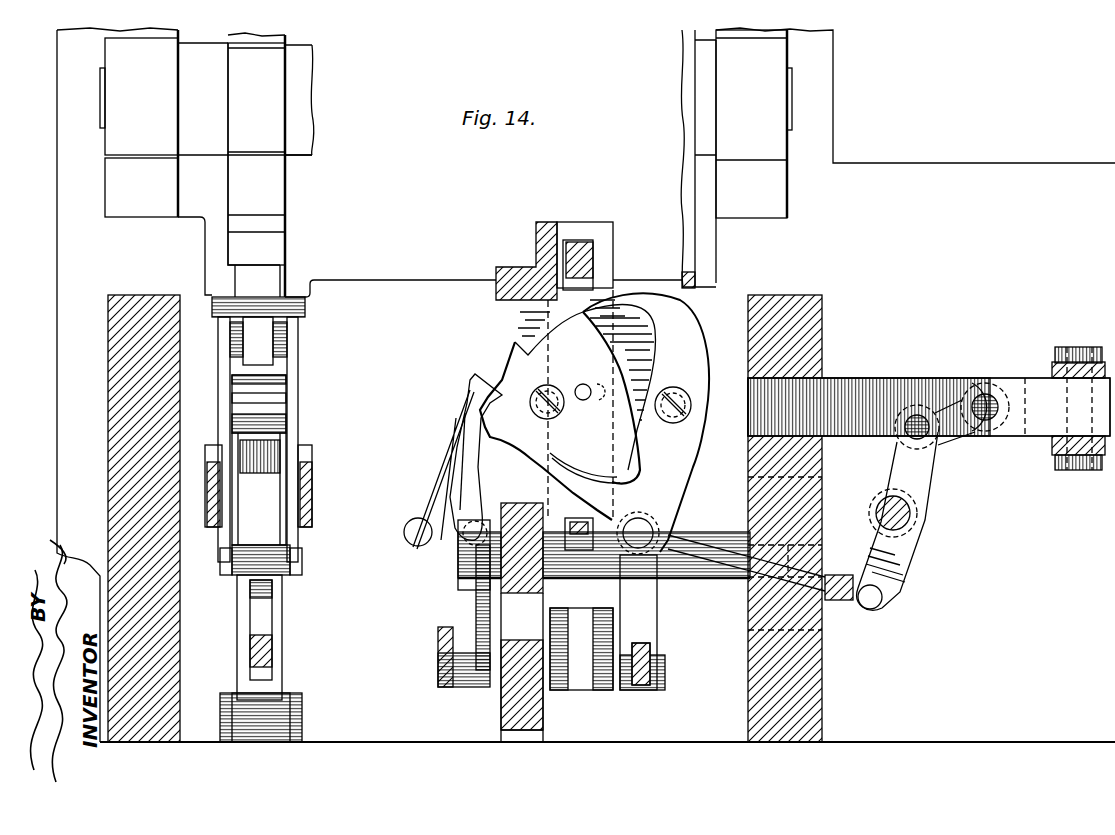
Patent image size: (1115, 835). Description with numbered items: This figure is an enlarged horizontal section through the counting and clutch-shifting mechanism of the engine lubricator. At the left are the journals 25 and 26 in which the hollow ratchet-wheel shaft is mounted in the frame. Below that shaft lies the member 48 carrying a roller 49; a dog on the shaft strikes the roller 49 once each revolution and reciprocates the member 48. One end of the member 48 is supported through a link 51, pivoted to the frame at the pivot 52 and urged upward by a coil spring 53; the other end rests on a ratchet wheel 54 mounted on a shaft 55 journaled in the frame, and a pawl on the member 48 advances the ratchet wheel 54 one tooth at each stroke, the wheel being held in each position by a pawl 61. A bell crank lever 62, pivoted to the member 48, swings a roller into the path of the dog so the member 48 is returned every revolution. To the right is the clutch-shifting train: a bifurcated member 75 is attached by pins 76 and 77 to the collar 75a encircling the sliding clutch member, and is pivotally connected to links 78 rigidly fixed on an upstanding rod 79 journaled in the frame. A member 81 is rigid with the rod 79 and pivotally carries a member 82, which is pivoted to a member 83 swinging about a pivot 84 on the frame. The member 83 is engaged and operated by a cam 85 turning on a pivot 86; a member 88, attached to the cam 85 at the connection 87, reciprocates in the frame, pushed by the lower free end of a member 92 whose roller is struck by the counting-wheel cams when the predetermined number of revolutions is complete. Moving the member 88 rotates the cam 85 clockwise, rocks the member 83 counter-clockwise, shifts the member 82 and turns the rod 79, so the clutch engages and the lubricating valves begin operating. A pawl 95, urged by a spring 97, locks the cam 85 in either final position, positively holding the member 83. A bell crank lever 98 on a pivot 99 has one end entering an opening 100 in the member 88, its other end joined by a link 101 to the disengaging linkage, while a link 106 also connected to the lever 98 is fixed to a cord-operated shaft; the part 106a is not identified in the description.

The journal 25 is at (800, 685).
The journal 26 is at (160, 663).
The member 48 is at (292, 395).
The roller 49 is at (265, 398).
The link 51 is at (270, 683).
The pivot 52 is at (302, 715).
The coil spring 53 is at (268, 650).
The ratchet wheel 54 is at (270, 196).
The shaft 55 is at (100, 100).
The pawl 61 is at (257, 310).
The bell crank lever 62 is at (302, 512).
The bifurcated member 75 is at (1013, 425).
The collar 75a is at (1055, 370).
The pin 76 is at (1077, 470).
The pin 77 is at (1075, 347).
The links 78 is at (918, 475).
The upstanding rod 79 is at (900, 518).
The member 81 is at (905, 567).
The member 82 is at (840, 598).
The member 83 is at (668, 452).
The pivot 84 is at (690, 402).
The cam 85 is at (573, 320).
The pivot 86 is at (537, 397).
The attachment point 87 is at (602, 381).
The member 88 is at (600, 256).
The member 92 is at (578, 250).
The pawl 95 is at (474, 392).
The spring 97 is at (440, 493).
The bell crank lever 98 is at (593, 577).
The pivot 99 is at (693, 570).
The opening 100 is at (580, 523).
The link 101 is at (640, 685).
The link 106 is at (440, 637).
The arm 106a is at (478, 617).